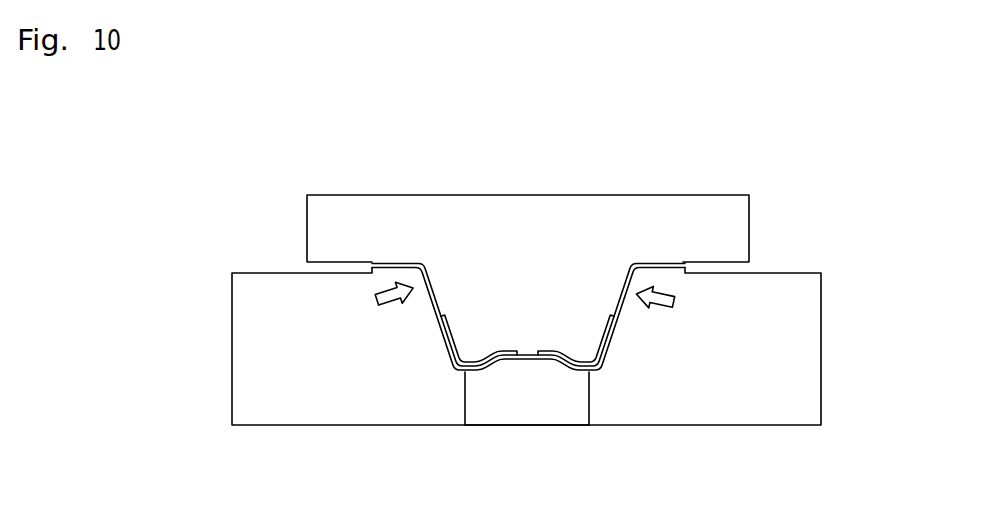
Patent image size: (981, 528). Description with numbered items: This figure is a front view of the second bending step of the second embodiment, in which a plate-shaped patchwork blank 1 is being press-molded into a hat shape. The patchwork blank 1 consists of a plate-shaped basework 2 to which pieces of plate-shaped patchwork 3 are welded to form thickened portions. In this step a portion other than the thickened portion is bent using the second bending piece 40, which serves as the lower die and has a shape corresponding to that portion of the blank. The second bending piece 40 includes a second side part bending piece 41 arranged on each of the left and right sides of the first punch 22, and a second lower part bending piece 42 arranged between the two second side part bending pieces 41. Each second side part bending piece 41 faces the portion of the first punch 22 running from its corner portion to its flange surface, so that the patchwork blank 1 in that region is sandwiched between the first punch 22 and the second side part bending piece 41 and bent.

The patchwork blank 1 is at (632, 272).
The basework 2 is at (683, 262).
The patchwork 3 is at (613, 327).
The first punch 22 is at (312, 230).
The second bending piece 40 is at (530, 378).
The second side part bending piece 41 is at (238, 376).
The second lower part bending piece 42 is at (511, 419).